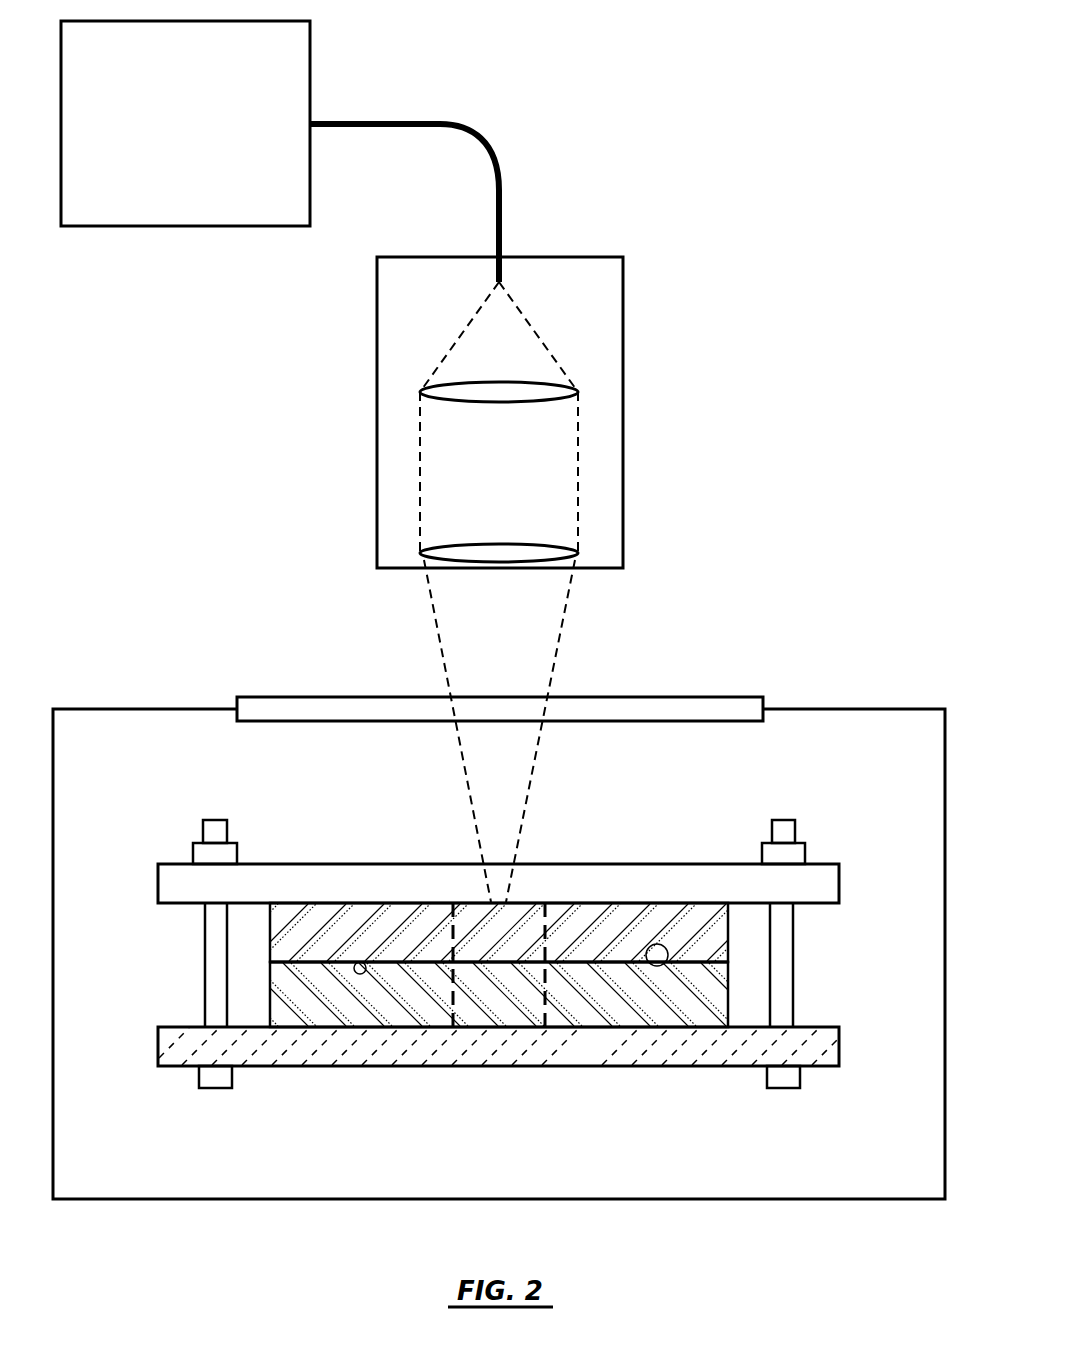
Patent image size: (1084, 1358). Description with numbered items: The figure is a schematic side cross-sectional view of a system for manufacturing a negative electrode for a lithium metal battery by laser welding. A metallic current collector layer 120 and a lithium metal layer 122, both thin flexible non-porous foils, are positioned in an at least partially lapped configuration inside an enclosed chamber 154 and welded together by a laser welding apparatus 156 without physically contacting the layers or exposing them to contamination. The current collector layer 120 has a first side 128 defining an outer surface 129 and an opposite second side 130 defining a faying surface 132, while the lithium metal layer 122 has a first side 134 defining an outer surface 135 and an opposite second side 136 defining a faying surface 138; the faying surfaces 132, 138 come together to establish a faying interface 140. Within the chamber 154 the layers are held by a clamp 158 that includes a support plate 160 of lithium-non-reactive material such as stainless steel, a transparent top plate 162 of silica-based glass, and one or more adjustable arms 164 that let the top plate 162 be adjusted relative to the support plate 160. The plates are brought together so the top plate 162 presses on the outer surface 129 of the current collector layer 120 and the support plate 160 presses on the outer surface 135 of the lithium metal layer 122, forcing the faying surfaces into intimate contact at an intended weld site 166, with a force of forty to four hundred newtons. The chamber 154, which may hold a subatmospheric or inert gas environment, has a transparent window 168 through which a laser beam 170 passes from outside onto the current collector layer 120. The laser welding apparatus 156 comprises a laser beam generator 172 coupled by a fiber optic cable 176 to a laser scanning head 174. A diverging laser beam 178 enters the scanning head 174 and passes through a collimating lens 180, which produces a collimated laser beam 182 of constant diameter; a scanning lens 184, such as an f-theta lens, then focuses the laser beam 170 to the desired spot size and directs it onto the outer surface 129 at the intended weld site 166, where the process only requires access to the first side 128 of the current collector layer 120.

The metallic current collector layer 120 is at (730, 937).
The lithium metal layer 122 is at (730, 995).
The first side of the current collector layer 128 is at (323, 901).
The outer surface of the current collector layer 129 is at (645, 903).
The second side of the current collector layer 130 is at (362, 962).
The faying surface of the current collector layer 132 is at (300, 968).
The first side of the lithium metal layer 134 is at (622, 1027).
The outer surface of the lithium metal layer 135 is at (438, 1027).
The second side of the lithium metal layer 136 is at (668, 962).
The faying surface of the lithium metal layer 138 is at (718, 966).
The faying interface 140 is at (270, 963).
The chamber 154 is at (185, 709).
The laser welding apparatus 156 is at (672, 318).
The clamp 158 is at (173, 855).
The support plate 160 is at (313, 1067).
The transparent top plate 162 is at (385, 864).
The adjustable arms 164 is at (203, 920).
The intended weld site 166 is at (548, 928).
The transparent window 168 is at (380, 697).
The laser beam 170 is at (560, 645).
The laser beam generator 172 is at (161, 138).
The laser scanning head 174 is at (377, 337).
The fiber optic cable 176 is at (503, 180).
The diverging laser beam 178 is at (533, 320).
The collimating lens 180 is at (578, 392).
The collimated laser beam 182 is at (578, 460).
The scanning lens 184 is at (420, 553).